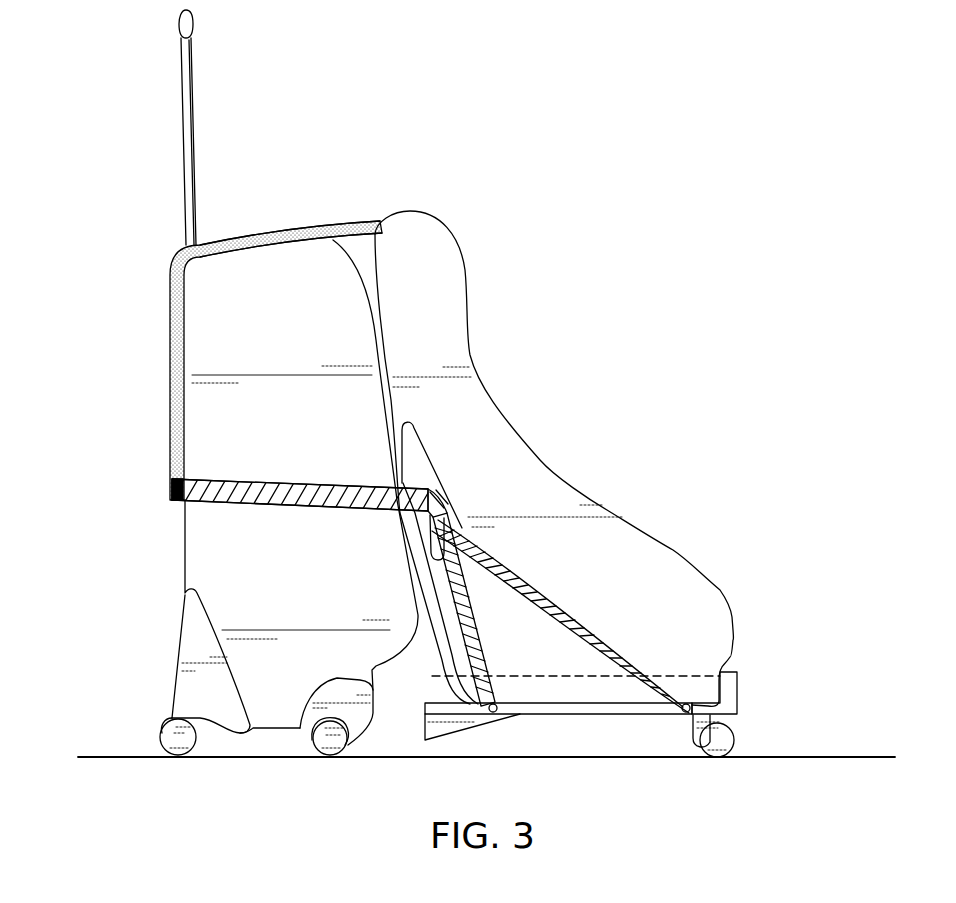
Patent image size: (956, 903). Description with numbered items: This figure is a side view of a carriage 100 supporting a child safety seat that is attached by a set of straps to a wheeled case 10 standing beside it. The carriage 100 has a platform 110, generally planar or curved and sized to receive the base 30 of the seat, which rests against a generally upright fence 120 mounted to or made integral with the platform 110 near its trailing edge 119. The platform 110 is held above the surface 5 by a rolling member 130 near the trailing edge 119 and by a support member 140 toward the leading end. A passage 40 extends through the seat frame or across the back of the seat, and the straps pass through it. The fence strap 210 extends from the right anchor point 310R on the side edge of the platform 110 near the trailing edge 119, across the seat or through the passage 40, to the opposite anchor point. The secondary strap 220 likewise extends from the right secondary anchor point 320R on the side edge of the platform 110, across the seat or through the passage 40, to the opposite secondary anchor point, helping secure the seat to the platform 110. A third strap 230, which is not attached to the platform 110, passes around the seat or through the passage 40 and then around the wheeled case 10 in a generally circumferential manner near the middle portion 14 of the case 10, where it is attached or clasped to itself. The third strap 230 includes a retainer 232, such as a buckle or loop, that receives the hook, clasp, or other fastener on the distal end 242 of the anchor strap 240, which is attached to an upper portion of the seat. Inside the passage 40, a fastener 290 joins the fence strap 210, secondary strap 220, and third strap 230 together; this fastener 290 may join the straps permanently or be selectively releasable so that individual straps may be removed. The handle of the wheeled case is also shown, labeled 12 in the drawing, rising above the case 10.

The surface 5 is at (110, 757).
The wheeled case 10 is at (280, 336).
The handle frame 12 is at (163, 241).
The middle portion 14 is at (100, 488).
The base 30 is at (694, 680).
The passage 40 is at (432, 473).
The carriage 100 is at (762, 461).
The platform 110 is at (575, 714).
The trailing edge 119 is at (760, 703).
The fence 120 is at (739, 684).
The rolling member 130 is at (736, 740).
The support member 140 is at (470, 726).
The fence strap 210 is at (552, 598).
The secondary strap 220 is at (477, 608).
The third strap 230 is at (241, 479).
The retainer 232 is at (178, 503).
The anchor strap 240 is at (339, 223).
The distal end 242 is at (158, 475).
The fastener 290 is at (445, 507).
The right anchor point 310R is at (684, 704).
The right secondary anchor point 320R is at (497, 708).